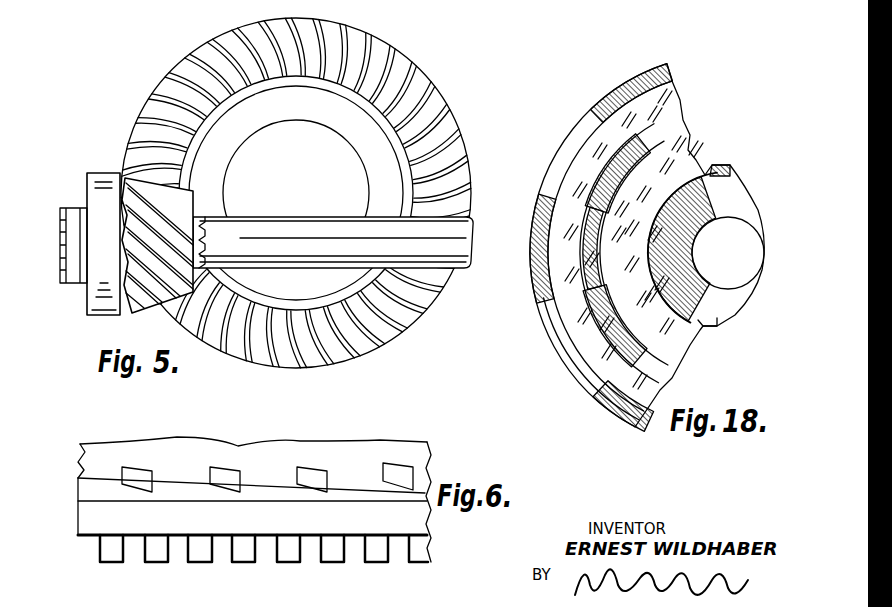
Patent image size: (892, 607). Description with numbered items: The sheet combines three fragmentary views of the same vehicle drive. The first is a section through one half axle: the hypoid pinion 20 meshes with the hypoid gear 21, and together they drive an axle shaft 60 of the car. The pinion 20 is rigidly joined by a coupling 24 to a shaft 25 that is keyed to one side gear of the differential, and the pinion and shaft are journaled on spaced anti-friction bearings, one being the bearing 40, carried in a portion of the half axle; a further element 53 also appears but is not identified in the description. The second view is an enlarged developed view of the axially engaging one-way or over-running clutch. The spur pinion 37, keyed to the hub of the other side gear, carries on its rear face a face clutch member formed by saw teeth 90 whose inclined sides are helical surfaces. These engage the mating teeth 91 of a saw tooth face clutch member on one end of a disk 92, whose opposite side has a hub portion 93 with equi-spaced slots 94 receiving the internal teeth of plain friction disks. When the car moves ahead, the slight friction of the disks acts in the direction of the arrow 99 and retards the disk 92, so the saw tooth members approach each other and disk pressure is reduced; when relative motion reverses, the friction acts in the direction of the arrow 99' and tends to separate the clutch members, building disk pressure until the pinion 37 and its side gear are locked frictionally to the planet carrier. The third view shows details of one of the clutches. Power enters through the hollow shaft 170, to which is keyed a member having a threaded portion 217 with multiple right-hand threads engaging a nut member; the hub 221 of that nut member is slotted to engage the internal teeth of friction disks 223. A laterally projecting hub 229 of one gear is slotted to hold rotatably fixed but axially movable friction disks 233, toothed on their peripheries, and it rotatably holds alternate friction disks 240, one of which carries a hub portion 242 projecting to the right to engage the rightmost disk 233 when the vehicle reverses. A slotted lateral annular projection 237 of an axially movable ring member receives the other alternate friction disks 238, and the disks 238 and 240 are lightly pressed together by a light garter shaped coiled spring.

In FIG. 5, the hypoid gear 21 is at (437, 125).
In FIG. 5, the shaft 25 is at (290, 228).
In FIG. 5, the coupling 24 is at (200, 247).
In FIG. 5, the hypoid pinion 20 is at (151, 293).
In FIG. 5, the anti-friction bearing 40 is at (104, 197).
In FIG. 5, the axle shaft 60 is at (228, 214).
In FIG. 5, the gear reference 53 is at (512, 5).
In FIG. 6, the spur pinion 37 is at (368, 453).
In FIG. 6, the disk 92 is at (90, 515).
In FIG. 6, the mating teeth 91 is at (341, 490).
In FIG. 6, the saw teeth 90 is at (282, 472).
In FIG. 6, the hub portion 93 is at (160, 555).
In FIG. 6, the slots 94 is at (355, 553).
In FIG. 6, the arrow 99 is at (203, 586).
In FIG. 6, the arrow 99' is at (274, 586).
In FIG. 18, the friction disks 240 is at (577, 307).
In FIG. 18, the slotted lateral annular projection 237 is at (627, 423).
In FIG. 18, the hub portion 242 is at (590, 217).
In FIG. 18, the friction disks 233 is at (678, 365).
In FIG. 18, the hub 229 is at (600, 373).
In FIG. 18, the friction disks 238 is at (600, 393).
In FIG. 18, the friction disks 223 is at (693, 340).
In FIG. 18, the threaded portion 217 is at (700, 218).
In FIG. 18, the hollow shaft 170 is at (690, 241).
In FIG. 18, the hub 221 is at (698, 278).